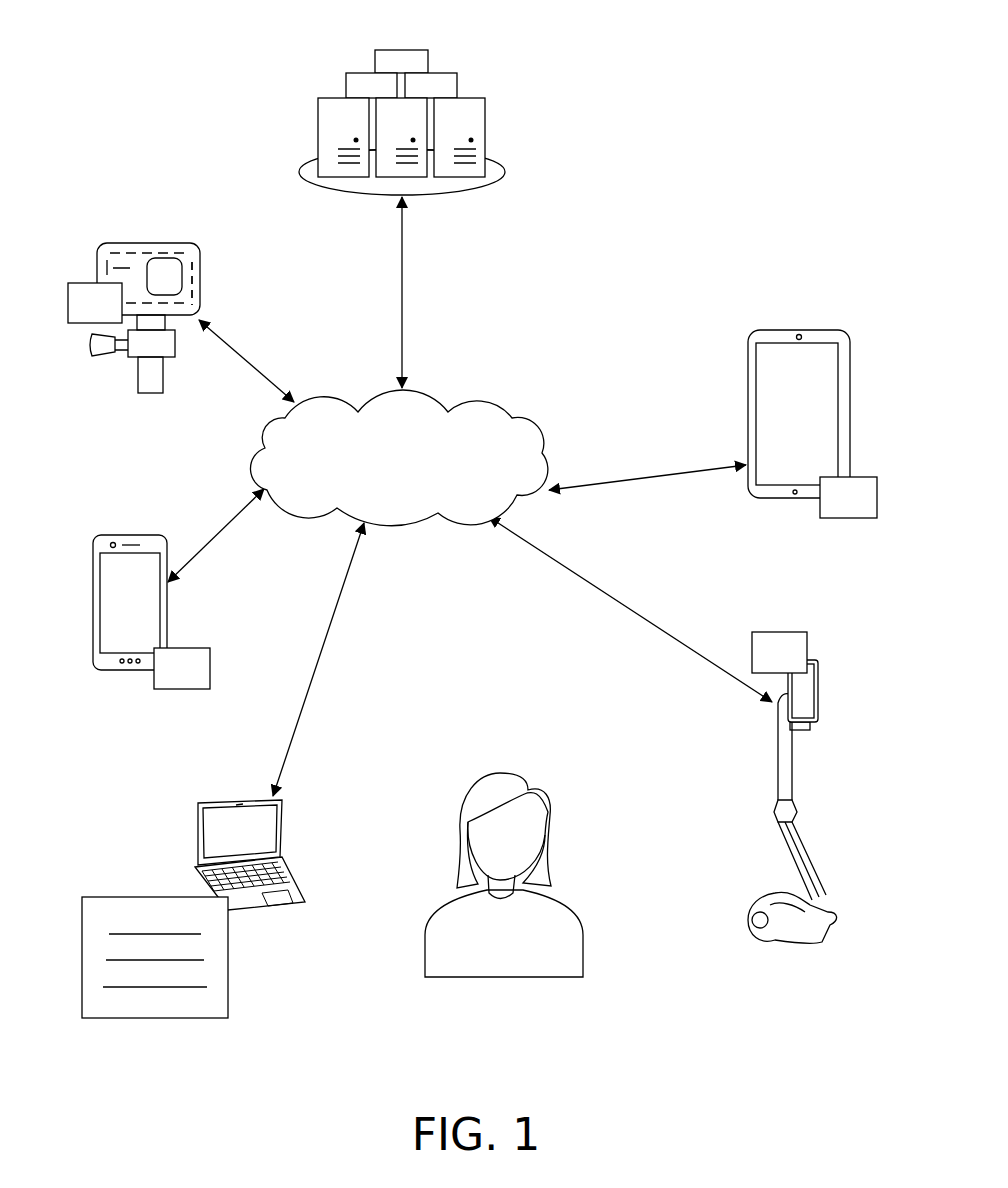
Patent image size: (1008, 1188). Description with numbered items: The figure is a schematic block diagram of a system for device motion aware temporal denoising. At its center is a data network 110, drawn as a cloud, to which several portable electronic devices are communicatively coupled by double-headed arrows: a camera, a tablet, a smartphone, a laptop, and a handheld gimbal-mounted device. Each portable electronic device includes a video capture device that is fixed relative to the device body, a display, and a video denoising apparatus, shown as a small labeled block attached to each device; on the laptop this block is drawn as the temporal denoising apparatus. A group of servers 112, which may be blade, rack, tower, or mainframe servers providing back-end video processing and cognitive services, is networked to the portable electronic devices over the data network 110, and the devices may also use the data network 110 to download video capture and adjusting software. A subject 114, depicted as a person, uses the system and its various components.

The data network 110 is at (398, 458).
The server 112 is at (485, 110).
The subject 114 is at (550, 877).